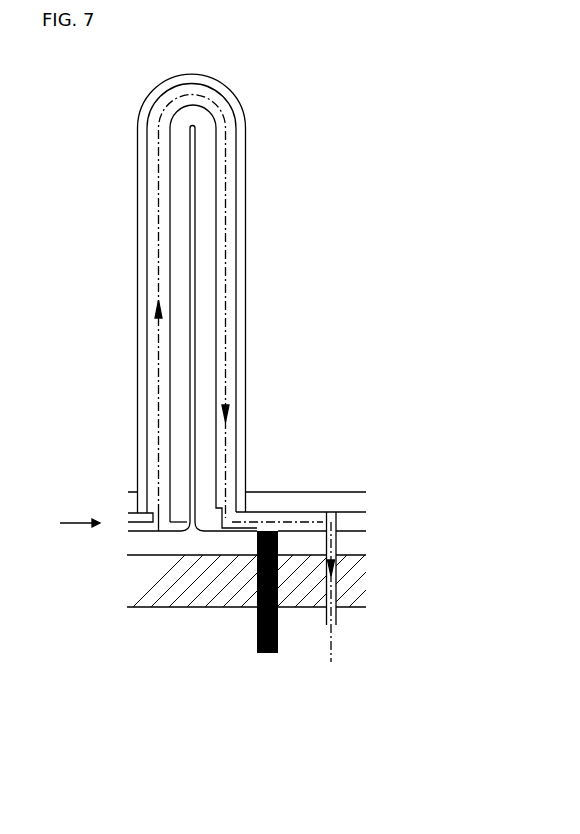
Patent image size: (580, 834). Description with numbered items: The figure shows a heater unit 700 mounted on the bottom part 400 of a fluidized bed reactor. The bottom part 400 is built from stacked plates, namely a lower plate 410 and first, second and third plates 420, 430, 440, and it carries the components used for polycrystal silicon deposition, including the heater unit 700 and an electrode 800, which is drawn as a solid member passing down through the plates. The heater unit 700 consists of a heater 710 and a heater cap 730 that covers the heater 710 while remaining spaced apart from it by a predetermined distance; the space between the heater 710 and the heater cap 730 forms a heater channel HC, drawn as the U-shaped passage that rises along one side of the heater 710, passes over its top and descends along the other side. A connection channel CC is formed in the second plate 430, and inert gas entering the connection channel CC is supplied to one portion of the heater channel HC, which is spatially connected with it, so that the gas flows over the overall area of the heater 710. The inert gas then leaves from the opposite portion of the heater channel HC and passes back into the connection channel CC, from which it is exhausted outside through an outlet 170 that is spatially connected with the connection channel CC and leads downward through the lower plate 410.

The heater unit 700 is at (343, 175).
The heater cap 730 is at (250, 181).
The heater 710 is at (208, 233).
The bottom part 400 is at (463, 488).
The third plate 440 is at (366, 495).
The second plate 430 is at (366, 518).
The first plate 420 is at (366, 541).
The lower plate 410 is at (366, 573).
The outlet 170 is at (336, 625).
The electrode 800 is at (270, 653).
The heater channel HC is at (155, 210).
The connection channel CC is at (128, 522).